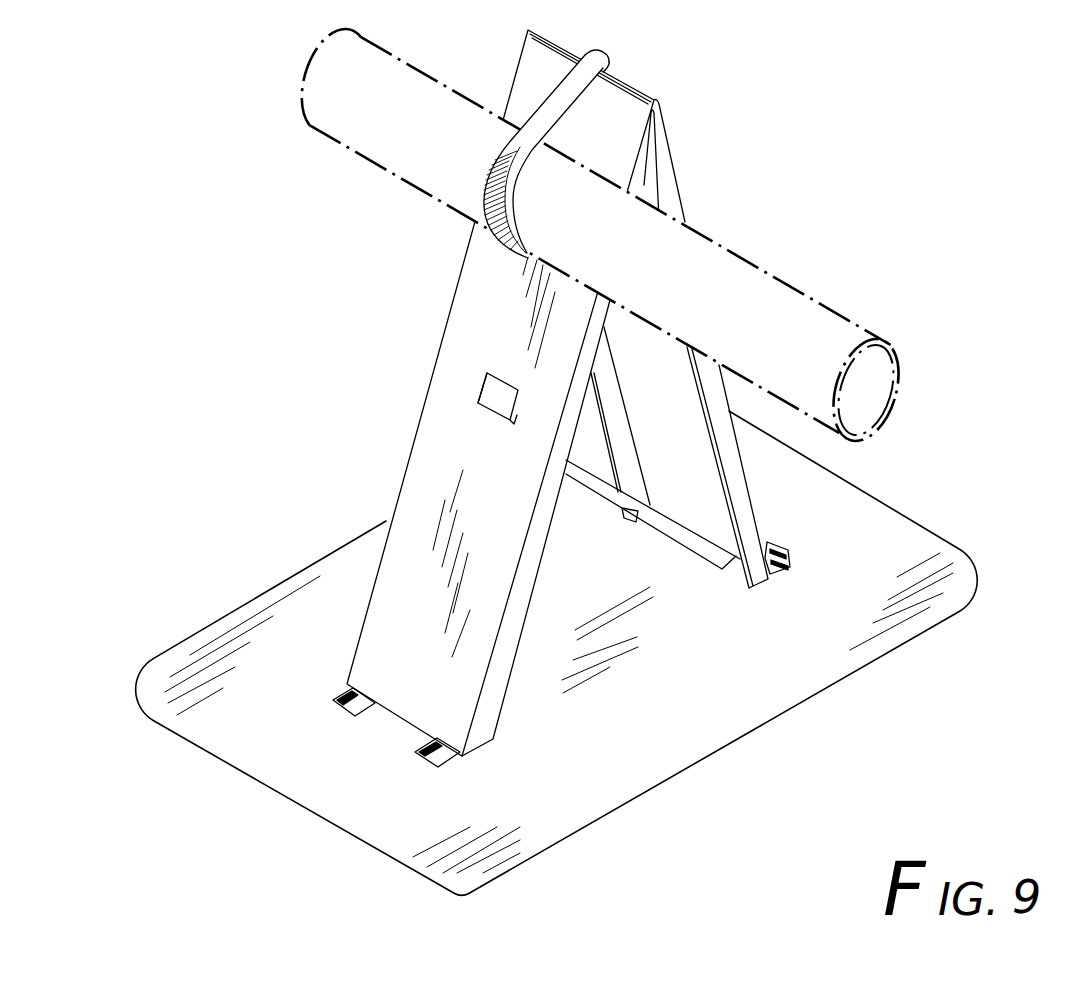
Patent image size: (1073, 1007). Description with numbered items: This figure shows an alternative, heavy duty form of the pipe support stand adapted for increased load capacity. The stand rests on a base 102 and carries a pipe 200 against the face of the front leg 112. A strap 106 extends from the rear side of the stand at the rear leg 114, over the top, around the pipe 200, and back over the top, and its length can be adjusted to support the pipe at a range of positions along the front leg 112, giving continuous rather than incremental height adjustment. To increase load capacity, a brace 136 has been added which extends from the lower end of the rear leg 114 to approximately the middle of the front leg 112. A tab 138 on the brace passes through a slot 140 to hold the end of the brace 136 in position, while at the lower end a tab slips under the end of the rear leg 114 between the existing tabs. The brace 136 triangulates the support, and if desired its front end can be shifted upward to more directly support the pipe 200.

The base 102 is at (923, 632).
The strap 106 is at (603, 57).
The front leg 112 is at (397, 497).
The rear leg 114 is at (692, 195).
The brace 136 is at (699, 553).
The tab 138 is at (487, 373).
The slot 140 is at (478, 403).
The pipe 200 is at (825, 305).